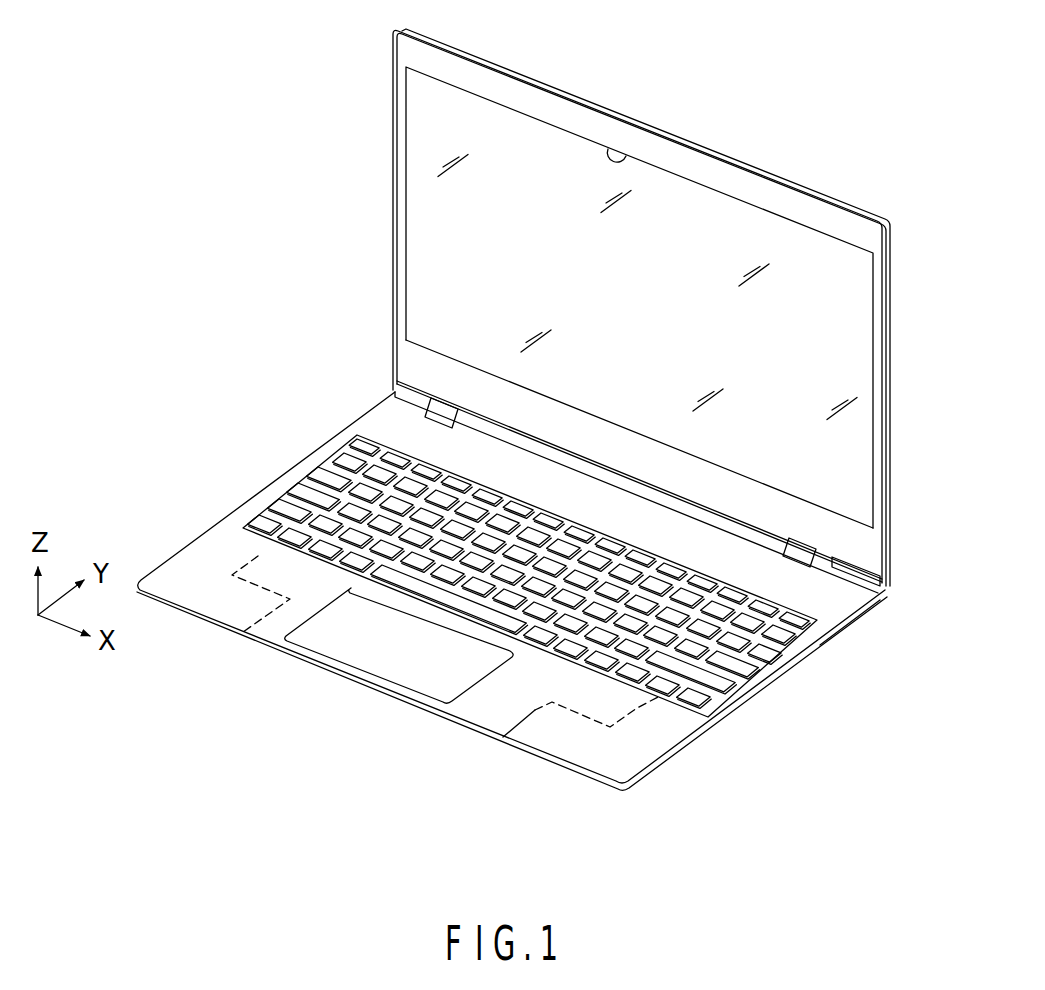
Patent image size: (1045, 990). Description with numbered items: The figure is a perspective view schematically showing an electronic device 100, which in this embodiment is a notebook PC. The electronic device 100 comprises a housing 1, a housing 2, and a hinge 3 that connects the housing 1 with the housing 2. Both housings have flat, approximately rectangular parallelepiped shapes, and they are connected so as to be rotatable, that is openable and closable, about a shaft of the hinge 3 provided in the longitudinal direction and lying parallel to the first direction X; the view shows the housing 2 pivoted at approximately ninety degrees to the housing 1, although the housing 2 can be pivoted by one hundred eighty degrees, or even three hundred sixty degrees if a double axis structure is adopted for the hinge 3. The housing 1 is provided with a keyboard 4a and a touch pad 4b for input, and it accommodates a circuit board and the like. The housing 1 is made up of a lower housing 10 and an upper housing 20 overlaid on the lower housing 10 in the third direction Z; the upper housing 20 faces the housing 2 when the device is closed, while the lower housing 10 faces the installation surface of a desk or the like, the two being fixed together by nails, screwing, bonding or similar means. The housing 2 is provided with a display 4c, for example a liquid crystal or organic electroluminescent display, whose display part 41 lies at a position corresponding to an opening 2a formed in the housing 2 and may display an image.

The electronic device 100 is at (903, 157).
The housing 1 is at (470, 806).
The lower housing 10 is at (414, 713).
The upper housing 20 is at (478, 705).
The housing 2 is at (382, 331).
The opening 2a is at (612, 145).
The hinge 3 is at (455, 418).
The keyboard 4a is at (310, 478).
The touch pad 4b is at (382, 660).
The display 4c is at (715, 215).
The display part 41 is at (800, 265).